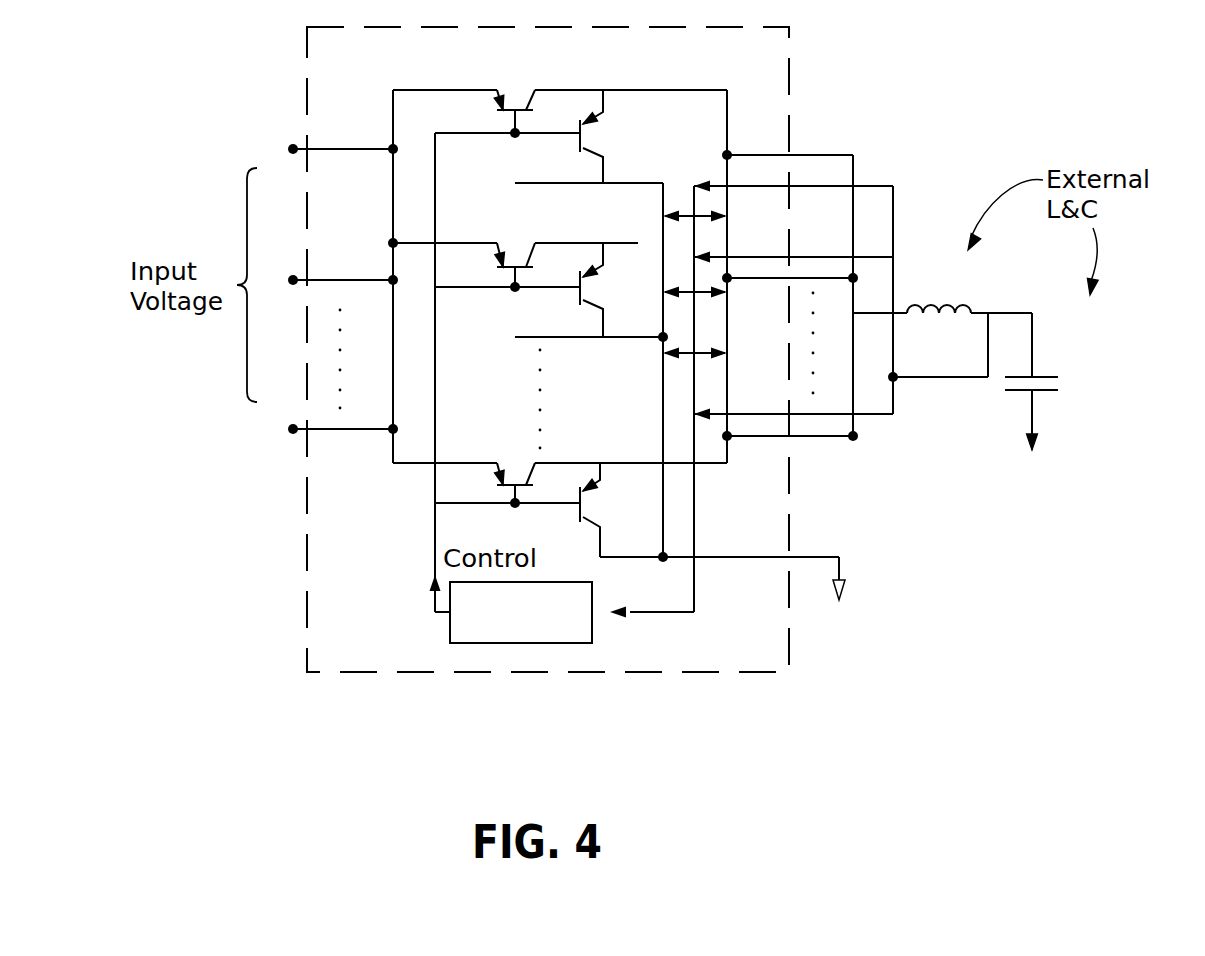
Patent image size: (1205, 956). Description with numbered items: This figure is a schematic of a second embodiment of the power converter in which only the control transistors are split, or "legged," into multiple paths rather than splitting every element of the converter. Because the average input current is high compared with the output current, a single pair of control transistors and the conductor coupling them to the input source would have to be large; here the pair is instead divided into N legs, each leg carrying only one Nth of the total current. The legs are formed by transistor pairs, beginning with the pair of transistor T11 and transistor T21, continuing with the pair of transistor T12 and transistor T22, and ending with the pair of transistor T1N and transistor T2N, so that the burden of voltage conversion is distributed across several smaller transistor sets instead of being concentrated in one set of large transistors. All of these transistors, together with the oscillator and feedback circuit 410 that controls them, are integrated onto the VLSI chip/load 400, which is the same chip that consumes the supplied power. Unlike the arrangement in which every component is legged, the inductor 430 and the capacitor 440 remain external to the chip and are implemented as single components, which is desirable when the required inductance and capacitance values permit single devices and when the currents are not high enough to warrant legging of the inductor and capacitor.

The VLSI chip/load 400 is at (655, 672).
The oscillator and feedback circuit 410 is at (592, 640).
The inductor 430 is at (959, 354).
The capacitor 440 is at (1095, 339).
The transistor T11 is at (514, 90).
The transistor T12 is at (514, 250).
The transistor T1N is at (515, 465).
The transistor T21 is at (614, 136).
The transistor T22 is at (615, 290).
The transistor T2N is at (616, 510).